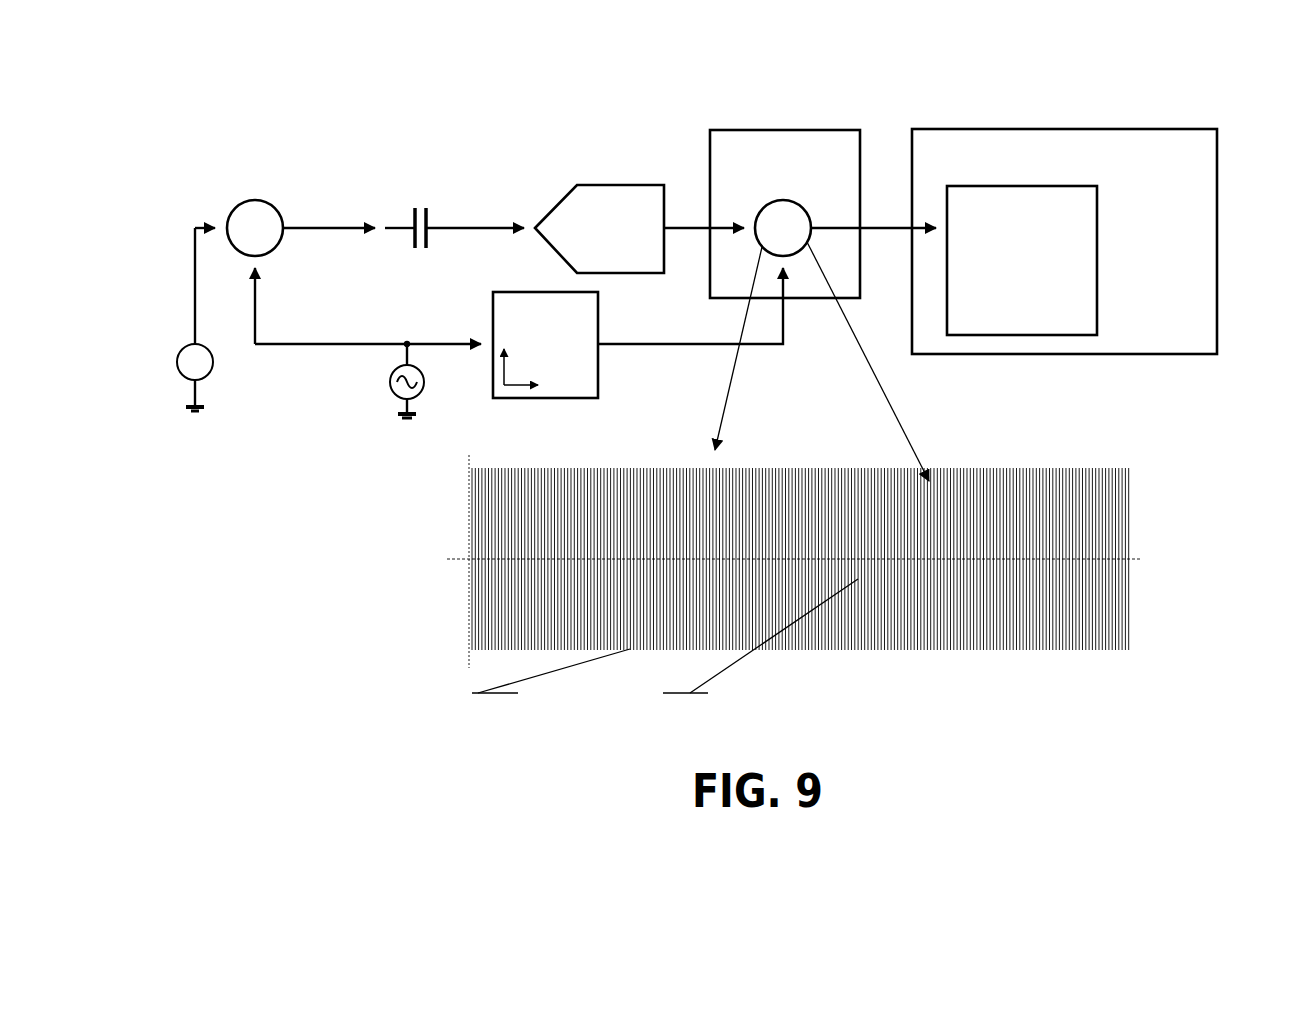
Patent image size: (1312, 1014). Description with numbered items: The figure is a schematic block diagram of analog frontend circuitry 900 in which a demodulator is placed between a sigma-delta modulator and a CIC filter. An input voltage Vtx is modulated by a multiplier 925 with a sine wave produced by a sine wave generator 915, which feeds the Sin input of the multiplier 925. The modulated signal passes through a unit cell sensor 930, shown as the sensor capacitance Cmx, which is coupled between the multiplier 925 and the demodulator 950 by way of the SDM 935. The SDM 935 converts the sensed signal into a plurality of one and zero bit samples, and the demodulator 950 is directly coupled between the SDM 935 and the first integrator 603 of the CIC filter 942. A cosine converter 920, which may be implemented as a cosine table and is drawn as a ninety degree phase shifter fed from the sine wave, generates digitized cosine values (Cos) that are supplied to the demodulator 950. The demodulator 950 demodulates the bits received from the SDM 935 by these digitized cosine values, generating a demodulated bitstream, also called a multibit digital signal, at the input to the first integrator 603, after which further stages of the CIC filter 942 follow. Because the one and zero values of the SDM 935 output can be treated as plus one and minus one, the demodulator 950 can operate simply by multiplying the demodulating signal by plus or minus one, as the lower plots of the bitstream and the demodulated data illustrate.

The analog frontend circuitry 900 is at (1302, 46).
The multiplier 925 is at (252, 200).
The unit cell sensor 930 is at (430, 164).
The sigma-delta modulator 935 is at (619, 183).
The demodulator 950 is at (805, 186).
The CIC filter 942 is at (1064, 241).
The first integrator 603 is at (1002, 299).
The sine wave generator 915 is at (392, 395).
The cosine converter 920 is at (548, 392).